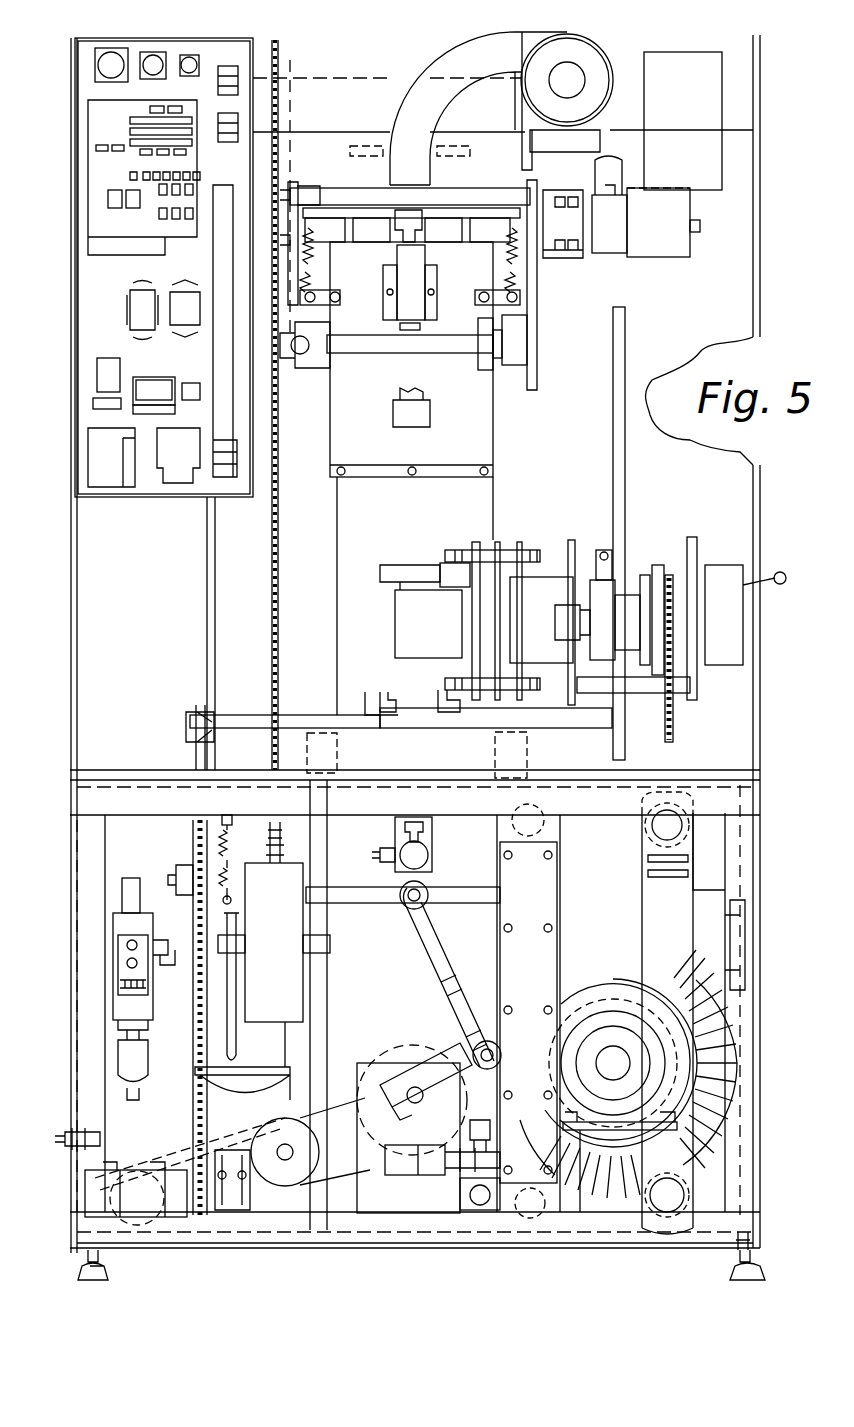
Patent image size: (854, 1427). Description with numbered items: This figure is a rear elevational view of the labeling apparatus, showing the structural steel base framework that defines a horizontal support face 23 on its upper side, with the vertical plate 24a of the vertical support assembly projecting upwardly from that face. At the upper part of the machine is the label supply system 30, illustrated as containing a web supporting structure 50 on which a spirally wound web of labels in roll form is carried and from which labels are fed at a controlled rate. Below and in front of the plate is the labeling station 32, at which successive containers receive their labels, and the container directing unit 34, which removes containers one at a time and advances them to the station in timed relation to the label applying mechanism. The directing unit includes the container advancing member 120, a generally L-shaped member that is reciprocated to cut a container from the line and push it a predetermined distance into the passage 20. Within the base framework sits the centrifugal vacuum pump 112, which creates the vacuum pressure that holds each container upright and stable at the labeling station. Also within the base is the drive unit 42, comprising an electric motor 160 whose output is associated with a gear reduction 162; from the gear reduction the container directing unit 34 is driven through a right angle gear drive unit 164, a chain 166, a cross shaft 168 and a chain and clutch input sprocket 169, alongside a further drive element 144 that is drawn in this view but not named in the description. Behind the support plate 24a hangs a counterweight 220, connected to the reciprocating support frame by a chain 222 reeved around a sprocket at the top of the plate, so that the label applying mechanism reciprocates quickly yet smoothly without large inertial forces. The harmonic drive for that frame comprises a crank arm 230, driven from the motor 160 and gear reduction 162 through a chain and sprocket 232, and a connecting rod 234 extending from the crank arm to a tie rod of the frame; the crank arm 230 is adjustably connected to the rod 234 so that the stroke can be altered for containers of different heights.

The passage 20 is at (455, 521).
The horizontal support face 23 is at (362, 712).
The vertical plate 24a is at (573, 478).
The label supply system 30 is at (648, 326).
The labeling station 32 is at (380, 630).
The container directing unit 34 is at (635, 543).
The drive unit 42 is at (180, 1063).
The web supporting structure 50 is at (438, 344).
The centrifugal vacuum pump 112 is at (625, 1006).
The container advancing member 120 is at (433, 652).
The drive sprocket 144 is at (672, 662).
The electric motor 160 is at (275, 1040).
The gear reduction 162 is at (225, 1112).
The right angle gear drive unit 164 is at (123, 1200).
The chain 166 is at (196, 920).
The cross shaft 168 is at (373, 730).
The chain and clutch input sprocket 169 is at (668, 580).
The counterweight 220 is at (290, 952).
The chain 222 is at (272, 705).
The crank arm 230 is at (470, 1045).
The chain and sprocket 232 is at (382, 1130).
The connecting rod 234 is at (442, 968).